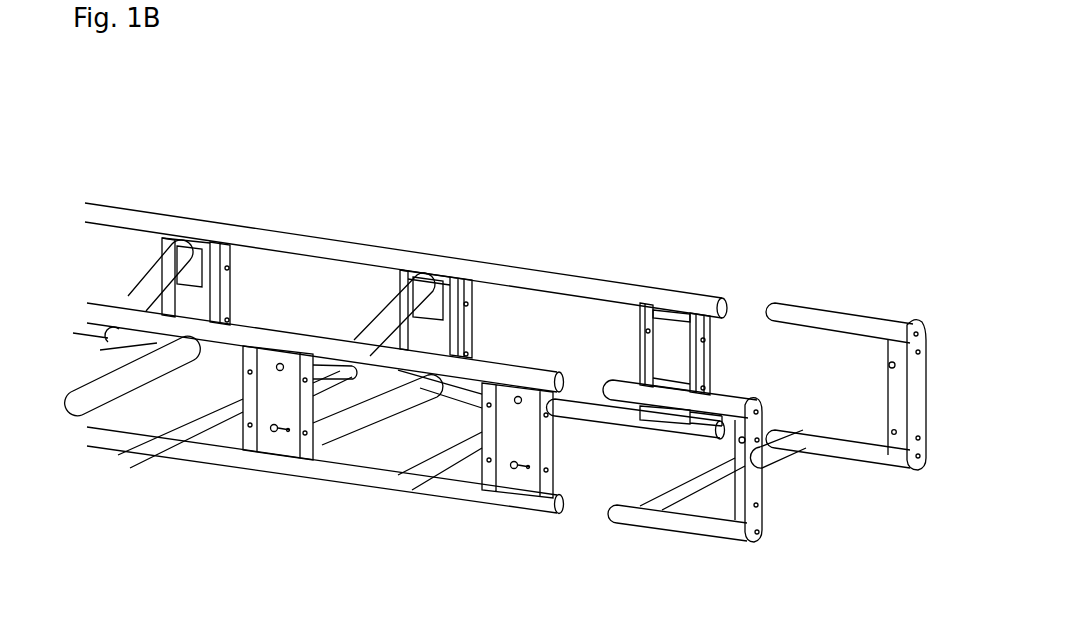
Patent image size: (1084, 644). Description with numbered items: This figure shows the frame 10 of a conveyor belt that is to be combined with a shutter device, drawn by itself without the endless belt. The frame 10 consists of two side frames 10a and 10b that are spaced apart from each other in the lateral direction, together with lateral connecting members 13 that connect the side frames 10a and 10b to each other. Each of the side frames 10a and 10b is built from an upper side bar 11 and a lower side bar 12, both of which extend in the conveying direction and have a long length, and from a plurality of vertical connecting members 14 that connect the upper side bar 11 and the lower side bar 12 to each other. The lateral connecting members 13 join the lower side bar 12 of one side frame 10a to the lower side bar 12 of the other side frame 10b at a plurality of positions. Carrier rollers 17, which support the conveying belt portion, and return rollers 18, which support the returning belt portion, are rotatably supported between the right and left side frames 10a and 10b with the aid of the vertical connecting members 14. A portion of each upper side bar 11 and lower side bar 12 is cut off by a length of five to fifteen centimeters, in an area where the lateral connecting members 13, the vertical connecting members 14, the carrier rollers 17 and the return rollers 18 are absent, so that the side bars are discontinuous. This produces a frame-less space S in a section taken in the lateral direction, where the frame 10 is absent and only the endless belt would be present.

The frame 10 is at (246, 140).
The side frame 10a is at (510, 258).
The side frame 10b is at (160, 474).
The upper side bar 11 is at (578, 286).
The lower side bar 12 is at (322, 466).
The lateral connecting member 13 is at (200, 428).
The vertical connecting member 14 is at (202, 298).
The carrier roller 17 is at (140, 295).
The return roller 18 is at (107, 397).
The frame-less space S is at (743, 313).